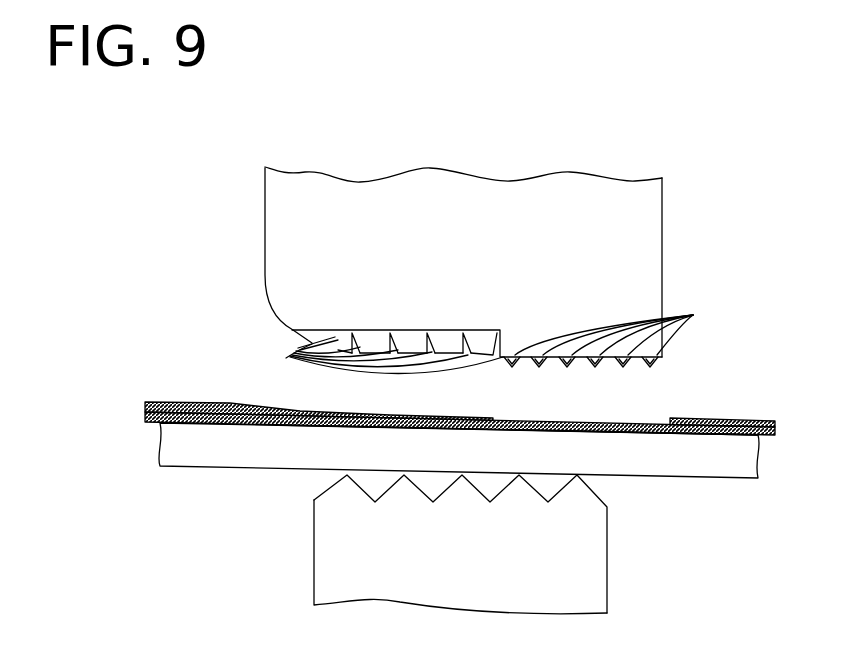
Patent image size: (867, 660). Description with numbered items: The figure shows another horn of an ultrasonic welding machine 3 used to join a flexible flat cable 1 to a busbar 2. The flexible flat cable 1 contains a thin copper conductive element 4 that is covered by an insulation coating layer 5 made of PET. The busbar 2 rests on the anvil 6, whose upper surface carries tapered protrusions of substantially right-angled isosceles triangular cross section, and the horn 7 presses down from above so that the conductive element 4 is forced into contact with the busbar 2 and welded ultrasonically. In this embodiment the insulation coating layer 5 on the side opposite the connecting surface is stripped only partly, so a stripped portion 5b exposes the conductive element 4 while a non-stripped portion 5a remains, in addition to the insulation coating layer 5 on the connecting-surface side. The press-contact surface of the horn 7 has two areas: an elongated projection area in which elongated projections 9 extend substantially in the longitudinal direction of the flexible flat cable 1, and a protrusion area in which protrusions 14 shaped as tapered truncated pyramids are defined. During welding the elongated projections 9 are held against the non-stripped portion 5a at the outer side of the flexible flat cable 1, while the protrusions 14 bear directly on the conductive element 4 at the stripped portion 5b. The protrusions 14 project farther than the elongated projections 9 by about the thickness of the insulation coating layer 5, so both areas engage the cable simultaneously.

The flexible flat cable 1 is at (718, 415).
The busbar 2 is at (692, 478).
The ultrasonic welding machine 3 is at (679, 246).
The conductive element 4 is at (312, 425).
The insulation coating layer 5 is at (235, 402).
The non-stripped portion 5a is at (413, 413).
The stripped portion 5b is at (577, 422).
The anvil 6 is at (602, 585).
The horn 7 is at (278, 207).
The elongated projections 9 is at (382, 355).
The protrusions 14 is at (617, 325).